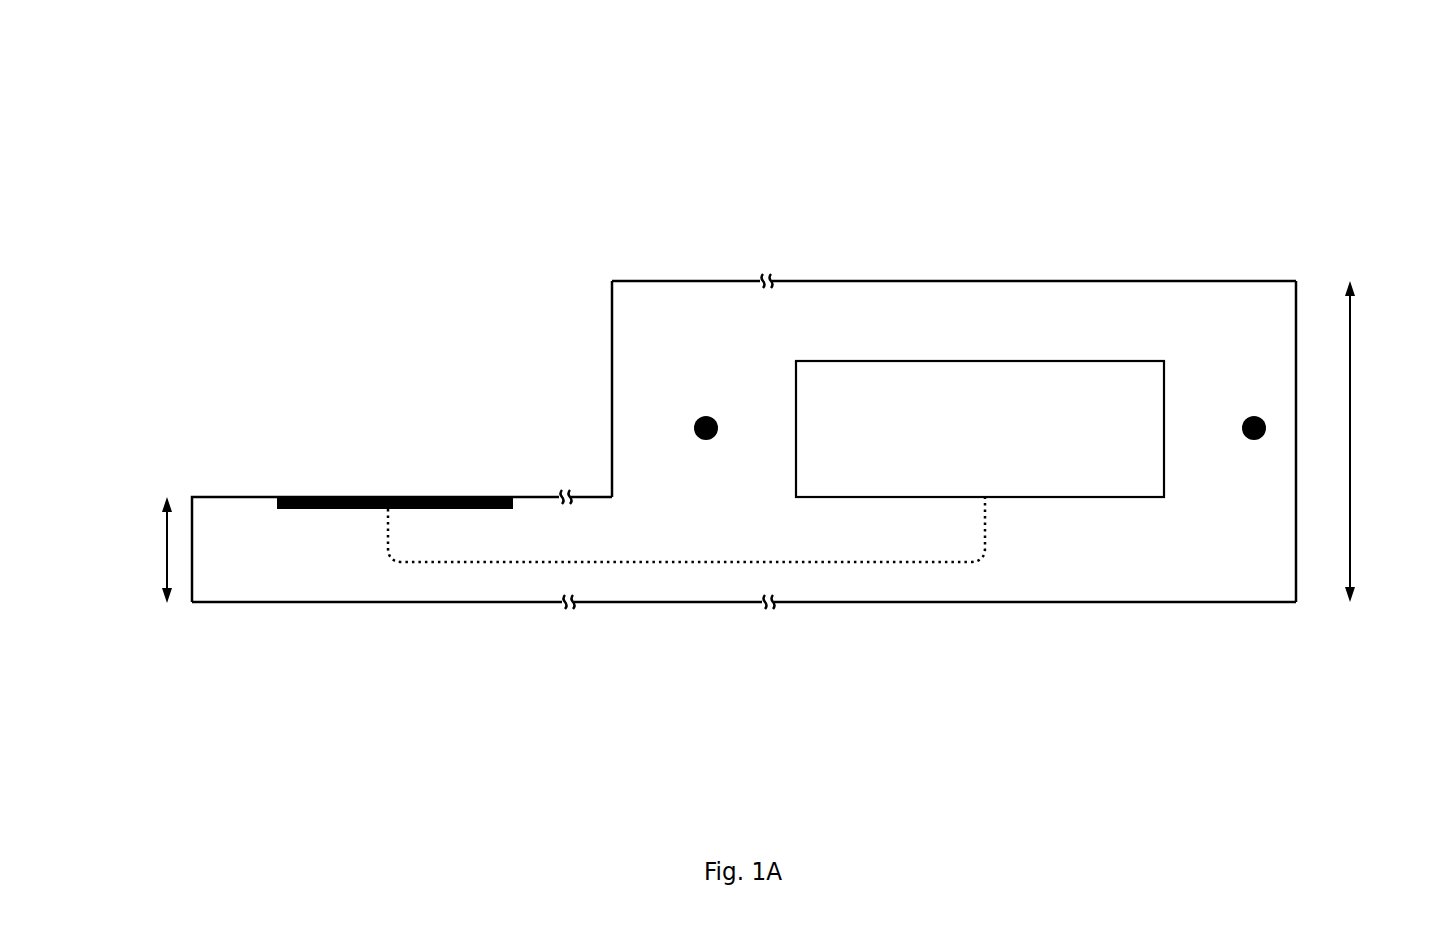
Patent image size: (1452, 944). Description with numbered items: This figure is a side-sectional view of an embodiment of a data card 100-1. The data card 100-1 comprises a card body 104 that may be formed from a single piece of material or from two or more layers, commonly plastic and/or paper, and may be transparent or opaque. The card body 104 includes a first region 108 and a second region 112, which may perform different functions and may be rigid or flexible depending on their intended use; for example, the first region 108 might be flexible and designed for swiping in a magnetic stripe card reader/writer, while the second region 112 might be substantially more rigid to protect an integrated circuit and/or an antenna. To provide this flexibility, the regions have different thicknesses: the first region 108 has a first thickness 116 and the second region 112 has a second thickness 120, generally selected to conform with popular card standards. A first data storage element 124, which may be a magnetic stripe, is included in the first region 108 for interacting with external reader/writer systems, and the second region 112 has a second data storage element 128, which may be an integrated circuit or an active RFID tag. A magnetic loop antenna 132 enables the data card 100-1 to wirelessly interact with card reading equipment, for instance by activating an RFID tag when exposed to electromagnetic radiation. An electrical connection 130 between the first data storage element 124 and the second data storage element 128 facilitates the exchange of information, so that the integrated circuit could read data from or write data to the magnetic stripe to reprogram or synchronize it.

The data card 100-1 is at (889, 128).
The card body 104 is at (604, 484).
The first region 108 is at (341, 605).
The second region 112 is at (1149, 605).
The first thickness 116 is at (167, 545).
The second thickness 120 is at (1350, 438).
The first data storage element 124 is at (390, 497).
The second data storage element 128 is at (990, 388).
The electrical connection 130 is at (874, 562).
The magnetic loop antenna 132 is at (1256, 418).